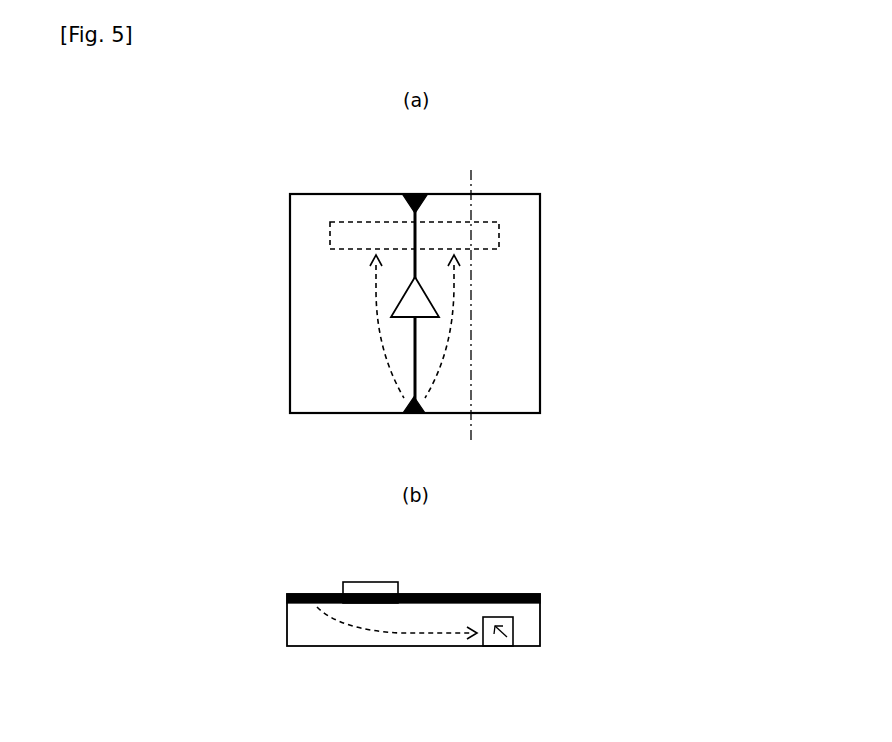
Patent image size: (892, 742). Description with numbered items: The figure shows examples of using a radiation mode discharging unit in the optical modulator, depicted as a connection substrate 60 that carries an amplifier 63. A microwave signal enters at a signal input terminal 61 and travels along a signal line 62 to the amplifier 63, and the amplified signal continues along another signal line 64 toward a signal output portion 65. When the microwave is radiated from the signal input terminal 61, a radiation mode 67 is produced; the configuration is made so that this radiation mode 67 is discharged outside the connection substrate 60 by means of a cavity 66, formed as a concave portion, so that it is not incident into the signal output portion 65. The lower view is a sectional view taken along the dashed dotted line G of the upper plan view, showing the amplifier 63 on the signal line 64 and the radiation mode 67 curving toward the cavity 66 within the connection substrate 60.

The connection substrate 60 is at (548, 317).
The signal input terminal 61 is at (403, 412).
The signal line 62 is at (415, 358).
The amplifier 63 is at (412, 303).
The signal line 64 is at (413, 261).
The signal output portion 65 is at (412, 195).
The cavity 66 is at (499, 237).
The radiation mode 67 is at (450, 343).